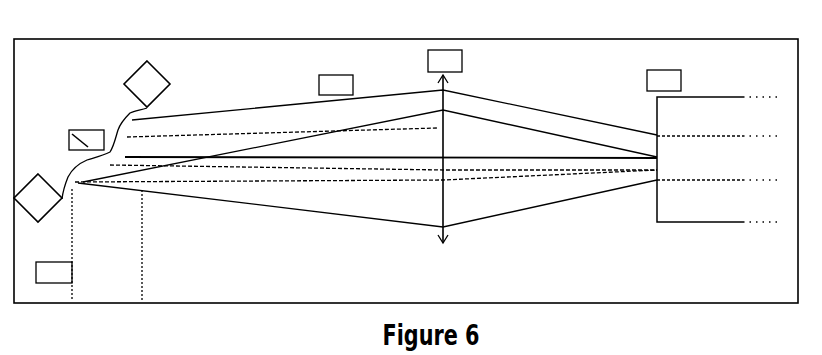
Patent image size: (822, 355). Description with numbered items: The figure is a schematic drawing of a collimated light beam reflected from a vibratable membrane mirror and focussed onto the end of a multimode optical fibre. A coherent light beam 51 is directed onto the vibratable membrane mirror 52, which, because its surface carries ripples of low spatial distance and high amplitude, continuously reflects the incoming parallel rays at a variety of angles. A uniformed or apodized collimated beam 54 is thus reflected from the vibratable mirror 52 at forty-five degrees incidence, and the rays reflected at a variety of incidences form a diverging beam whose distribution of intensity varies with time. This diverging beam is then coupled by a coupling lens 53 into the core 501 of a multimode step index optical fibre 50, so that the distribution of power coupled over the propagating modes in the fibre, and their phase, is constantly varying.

The multimode step index optical fibre 50 is at (698, 97).
The core 501 is at (703, 172).
The coherent light beam 51 is at (140, 243).
The vibratable membrane mirror 52 is at (69, 134).
The coupling lens 53 is at (442, 92).
The collimated beam 54 is at (330, 101).